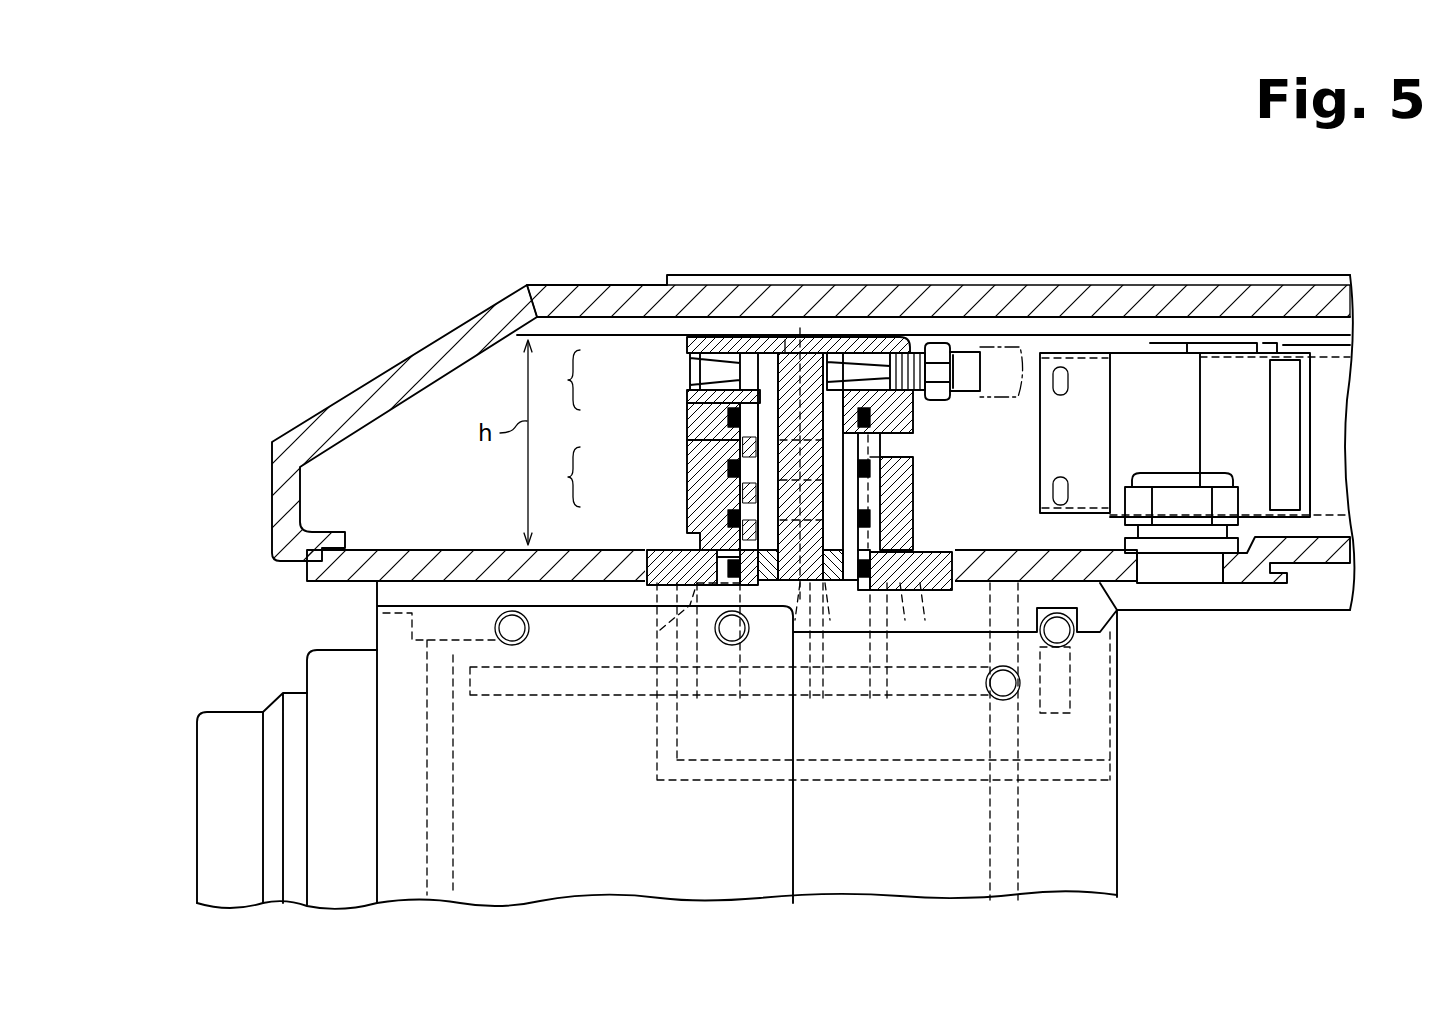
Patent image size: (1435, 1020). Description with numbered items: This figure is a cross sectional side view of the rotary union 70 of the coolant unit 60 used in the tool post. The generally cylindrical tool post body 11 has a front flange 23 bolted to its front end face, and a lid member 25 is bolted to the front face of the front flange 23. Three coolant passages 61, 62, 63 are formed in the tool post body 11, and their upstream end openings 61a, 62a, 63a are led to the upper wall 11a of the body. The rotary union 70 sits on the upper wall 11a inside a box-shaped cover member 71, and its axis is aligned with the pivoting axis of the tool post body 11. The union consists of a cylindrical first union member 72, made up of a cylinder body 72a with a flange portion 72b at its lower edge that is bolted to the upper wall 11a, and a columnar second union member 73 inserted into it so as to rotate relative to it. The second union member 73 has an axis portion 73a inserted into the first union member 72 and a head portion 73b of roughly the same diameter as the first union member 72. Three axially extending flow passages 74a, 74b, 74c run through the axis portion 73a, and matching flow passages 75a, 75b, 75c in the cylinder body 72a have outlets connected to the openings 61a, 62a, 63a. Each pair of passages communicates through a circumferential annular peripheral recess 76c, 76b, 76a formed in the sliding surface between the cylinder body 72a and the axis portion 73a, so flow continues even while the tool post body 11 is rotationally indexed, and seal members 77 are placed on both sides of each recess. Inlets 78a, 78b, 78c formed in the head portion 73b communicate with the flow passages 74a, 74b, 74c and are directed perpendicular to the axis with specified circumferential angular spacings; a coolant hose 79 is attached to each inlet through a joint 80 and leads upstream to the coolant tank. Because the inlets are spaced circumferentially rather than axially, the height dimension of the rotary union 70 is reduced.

The tool post body 11 is at (1126, 846).
The upper wall 11a is at (490, 575).
The front flange 23 is at (308, 674).
The lid member 25 is at (227, 713).
The coolant unit 60 is at (1033, 340).
The coolant passage 61 is at (697, 665).
The upstream end opening 61a is at (660, 630).
The coolant passage 62 is at (820, 665).
The upstream end opening 62a is at (820, 583).
The coolant passage 63 is at (873, 665).
The upstream end opening 63a is at (900, 583).
The rotary union 70 is at (853, 332).
The cover member 71 is at (452, 332).
The first union member 72 is at (557, 477).
The cylinder body 72a is at (728, 425).
The flange portion 72b is at (660, 550).
The second union member 73 is at (557, 380).
The axis portion 73a is at (700, 418).
The head portion 73b is at (687, 391).
The flow passage 74a is at (764, 360).
The flow passage 74b is at (810, 345).
The flow passage 74c is at (835, 355).
The flow passage 75a is at (742, 525).
The flow passage 75b is at (783, 583).
The flow passage 75c is at (895, 472).
The peripheral recess 76a is at (730, 442).
The peripheral recess 76b is at (872, 470).
The peripheral recess 76c is at (872, 520).
The seal member 77 is at (917, 424).
The inlet 78a is at (688, 358).
The inlet 78b is at (785, 340).
The inlet 78c is at (872, 360).
The coolant hose 79 is at (1003, 350).
The joint 80 is at (940, 352).